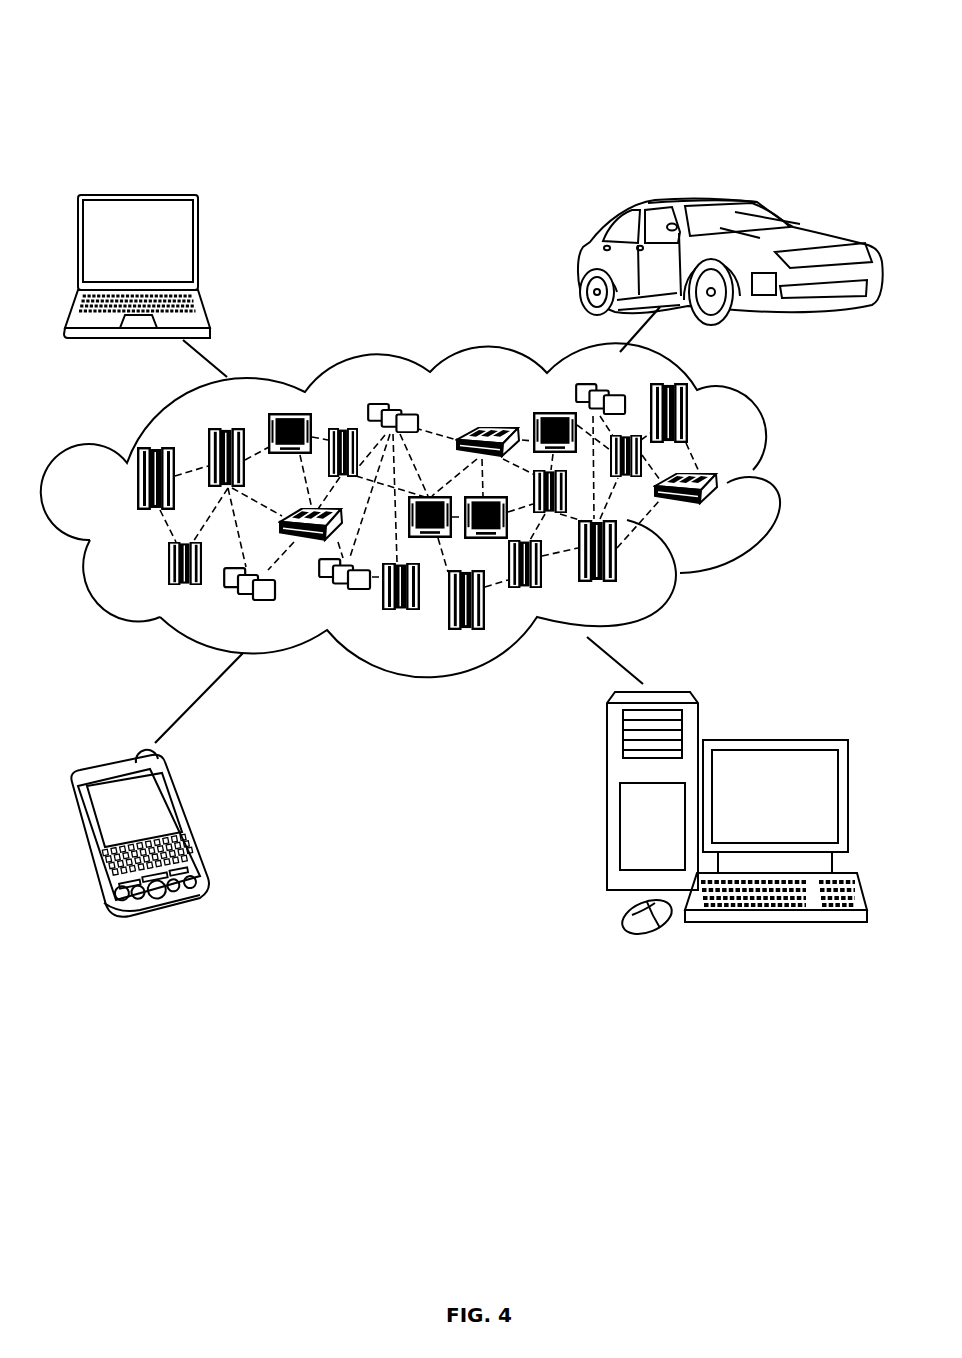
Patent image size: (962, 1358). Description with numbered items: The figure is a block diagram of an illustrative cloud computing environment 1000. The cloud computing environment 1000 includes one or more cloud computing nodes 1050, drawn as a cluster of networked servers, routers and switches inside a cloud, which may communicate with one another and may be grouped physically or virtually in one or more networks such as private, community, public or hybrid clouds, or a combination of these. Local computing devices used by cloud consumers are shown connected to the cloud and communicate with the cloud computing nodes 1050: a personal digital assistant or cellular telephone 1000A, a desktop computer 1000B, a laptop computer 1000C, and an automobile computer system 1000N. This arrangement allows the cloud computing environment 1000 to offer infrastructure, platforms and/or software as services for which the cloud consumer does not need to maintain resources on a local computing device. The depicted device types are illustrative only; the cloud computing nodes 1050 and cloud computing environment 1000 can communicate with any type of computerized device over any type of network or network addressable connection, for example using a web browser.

The cloud computing environment 1000 is at (68, 62).
The cloud computing nodes 1050 is at (729, 517).
The personal digital assistant (PDA) or cellular telephone 1000A is at (196, 820).
The desktop computer 1000B is at (776, 741).
The laptop computer 1000C is at (198, 248).
The automobile computer system 1000N is at (587, 264).